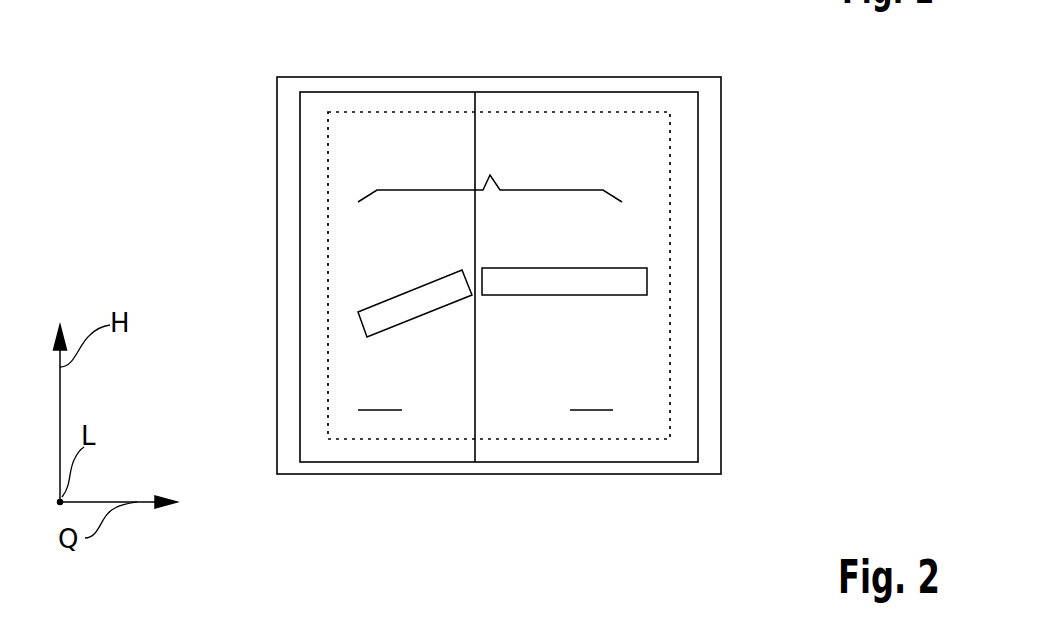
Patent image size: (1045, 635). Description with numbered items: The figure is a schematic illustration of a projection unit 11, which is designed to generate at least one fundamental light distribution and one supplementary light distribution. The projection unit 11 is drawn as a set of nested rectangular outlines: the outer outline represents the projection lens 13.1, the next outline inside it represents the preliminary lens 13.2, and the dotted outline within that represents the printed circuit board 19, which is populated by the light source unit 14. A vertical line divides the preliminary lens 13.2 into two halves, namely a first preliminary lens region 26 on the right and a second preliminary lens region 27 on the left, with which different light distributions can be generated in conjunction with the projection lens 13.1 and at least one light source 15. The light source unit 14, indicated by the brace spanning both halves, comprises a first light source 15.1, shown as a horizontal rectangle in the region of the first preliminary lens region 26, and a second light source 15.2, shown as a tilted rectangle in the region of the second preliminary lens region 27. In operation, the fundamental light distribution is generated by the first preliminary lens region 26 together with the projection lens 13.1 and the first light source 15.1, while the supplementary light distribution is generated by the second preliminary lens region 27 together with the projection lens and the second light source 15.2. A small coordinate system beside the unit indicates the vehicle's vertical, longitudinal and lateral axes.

The projection unit 11 is at (296, 54).
The projection lens 13.1 is at (721, 129).
The preliminary lens 13.2 is at (699, 170).
The printed circuit board 19 is at (670, 242).
The light source unit 14 is at (502, 189).
The light source 15 is at (502, 269).
The first light source 15.1 is at (550, 292).
The second light source 15.2 is at (437, 292).
The first preliminary lens region 26 is at (591, 396).
The second preliminary lens region 27 is at (380, 396).